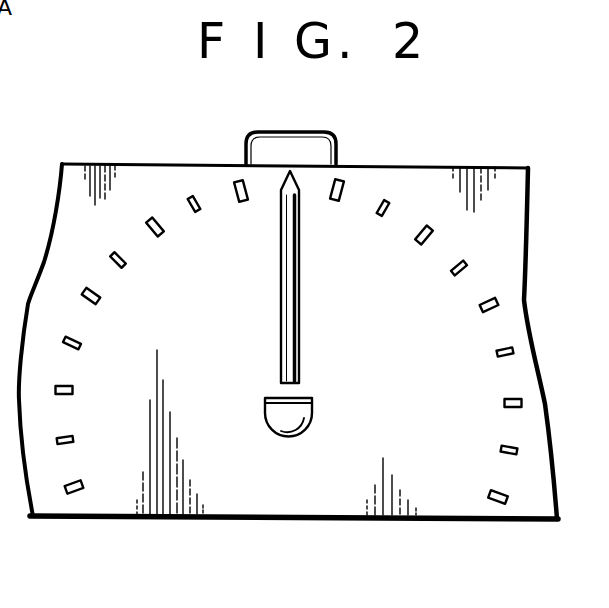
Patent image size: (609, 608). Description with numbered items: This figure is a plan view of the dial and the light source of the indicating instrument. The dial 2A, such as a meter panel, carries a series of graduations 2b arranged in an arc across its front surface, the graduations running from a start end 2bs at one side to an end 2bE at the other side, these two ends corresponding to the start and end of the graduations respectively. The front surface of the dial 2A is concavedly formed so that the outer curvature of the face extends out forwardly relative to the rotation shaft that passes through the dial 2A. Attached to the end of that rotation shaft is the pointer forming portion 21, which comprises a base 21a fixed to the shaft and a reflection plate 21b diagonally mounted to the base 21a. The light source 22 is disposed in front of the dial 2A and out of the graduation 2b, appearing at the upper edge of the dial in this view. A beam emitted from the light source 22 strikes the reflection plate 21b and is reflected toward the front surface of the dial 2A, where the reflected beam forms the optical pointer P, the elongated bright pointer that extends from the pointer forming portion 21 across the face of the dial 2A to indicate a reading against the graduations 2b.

The dial 2A is at (342, 499).
The graduation 2b is at (419, 258).
The start end of the graduations 2bs is at (100, 490).
The end end of the graduations 2bE is at (476, 495).
The light source 22 is at (298, 131).
The optical pointer P is at (298, 196).
The pointer forming portion 21 is at (272, 434).
The base 21a is at (311, 426).
The reflection plate 21b is at (306, 398).